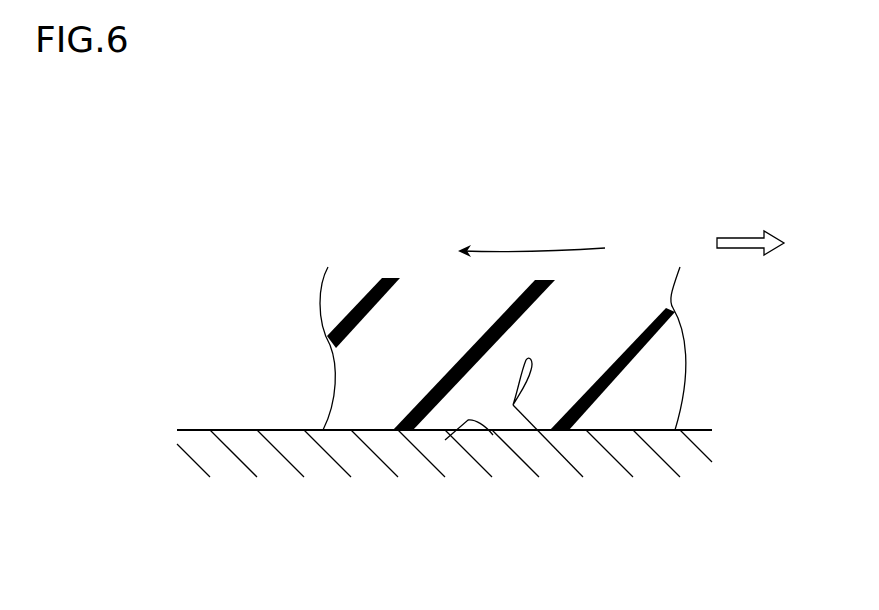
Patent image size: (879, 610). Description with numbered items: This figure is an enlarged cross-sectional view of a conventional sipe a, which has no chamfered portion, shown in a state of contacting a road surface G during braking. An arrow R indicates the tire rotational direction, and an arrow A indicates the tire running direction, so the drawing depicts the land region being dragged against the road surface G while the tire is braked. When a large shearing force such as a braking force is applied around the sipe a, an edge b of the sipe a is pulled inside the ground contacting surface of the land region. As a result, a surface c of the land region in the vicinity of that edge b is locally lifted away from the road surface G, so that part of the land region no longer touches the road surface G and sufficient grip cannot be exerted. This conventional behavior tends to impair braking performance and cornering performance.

The road surface G is at (278, 430).
The sipe a is at (538, 431).
The edge b is at (513, 405).
The surface c is at (445, 440).
The arrow R is at (520, 250).
The arrow A is at (762, 245).